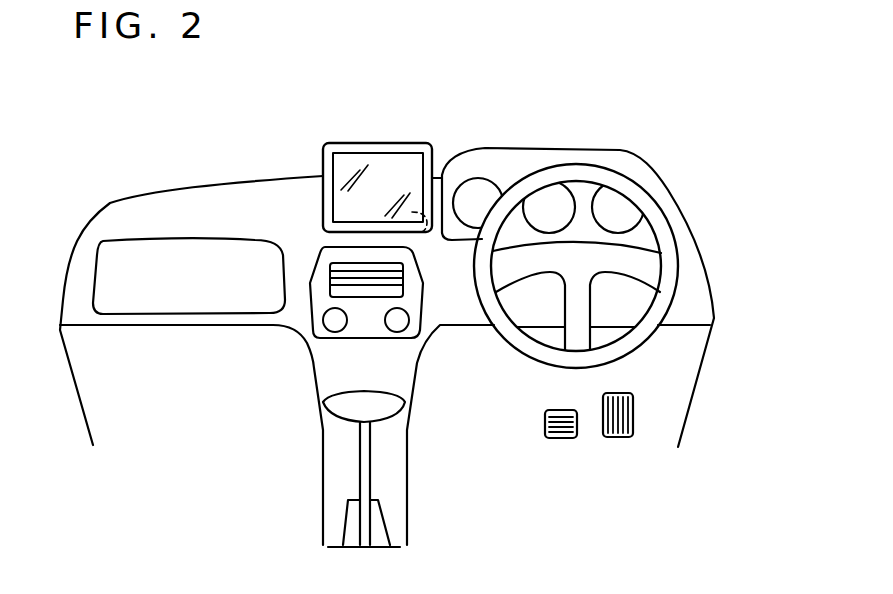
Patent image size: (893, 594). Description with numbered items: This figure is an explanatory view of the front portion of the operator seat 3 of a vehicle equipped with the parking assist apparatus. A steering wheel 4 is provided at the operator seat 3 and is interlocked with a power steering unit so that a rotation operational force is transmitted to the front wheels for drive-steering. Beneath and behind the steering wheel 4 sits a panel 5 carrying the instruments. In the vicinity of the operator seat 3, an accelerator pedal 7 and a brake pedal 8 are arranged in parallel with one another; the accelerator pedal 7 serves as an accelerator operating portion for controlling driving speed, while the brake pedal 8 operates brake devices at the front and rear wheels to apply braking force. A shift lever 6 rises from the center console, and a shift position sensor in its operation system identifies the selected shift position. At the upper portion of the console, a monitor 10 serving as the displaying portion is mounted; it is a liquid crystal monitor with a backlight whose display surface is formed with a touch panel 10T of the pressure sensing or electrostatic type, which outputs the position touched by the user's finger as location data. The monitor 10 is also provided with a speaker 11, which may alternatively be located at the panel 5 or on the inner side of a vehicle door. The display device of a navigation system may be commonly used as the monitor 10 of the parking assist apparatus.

The operator seat 3 is at (714, 187).
The steering wheel 4 is at (672, 243).
The panel 5 is at (618, 160).
The shift lever 6 is at (360, 402).
The accelerator pedal 7 is at (633, 415).
The brake pedal 8 is at (556, 409).
The monitor 10 is at (297, 182).
The touch panel 10T is at (323, 173).
The speaker 11 is at (427, 237).